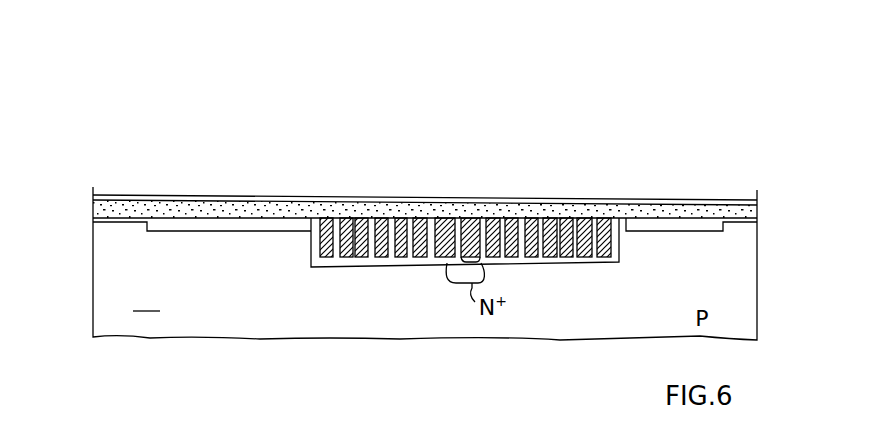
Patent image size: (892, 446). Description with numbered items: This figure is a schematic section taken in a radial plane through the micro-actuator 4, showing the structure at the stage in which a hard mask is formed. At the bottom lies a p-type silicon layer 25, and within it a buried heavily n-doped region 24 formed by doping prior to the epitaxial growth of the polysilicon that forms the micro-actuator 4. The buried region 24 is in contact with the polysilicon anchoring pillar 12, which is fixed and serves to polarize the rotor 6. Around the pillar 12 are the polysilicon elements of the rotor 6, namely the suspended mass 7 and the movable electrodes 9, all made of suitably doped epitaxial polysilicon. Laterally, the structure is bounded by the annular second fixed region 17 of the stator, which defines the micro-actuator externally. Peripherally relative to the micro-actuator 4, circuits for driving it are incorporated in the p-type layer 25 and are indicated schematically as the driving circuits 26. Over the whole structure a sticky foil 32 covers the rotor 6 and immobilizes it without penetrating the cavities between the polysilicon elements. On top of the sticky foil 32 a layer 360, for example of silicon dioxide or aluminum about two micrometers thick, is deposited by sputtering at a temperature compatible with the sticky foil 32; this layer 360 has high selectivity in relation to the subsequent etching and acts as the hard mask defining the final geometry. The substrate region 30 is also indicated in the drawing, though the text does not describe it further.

The micro-actuator 4 is at (284, 172).
The rotor 6 is at (418, 283).
The suspended mass 7 is at (437, 217).
The movable electrodes 9 is at (398, 257).
The anchoring pillar 12 is at (467, 217).
The second fixed region 17 is at (311, 255).
The buried N+ region 24 is at (455, 283).
The p-type silicon layer 25 is at (146, 300).
The driving circuits 26 is at (240, 228).
The substrate 30 is at (760, 304).
The sticky foil 32 is at (757, 215).
The layer 360 is at (708, 203).